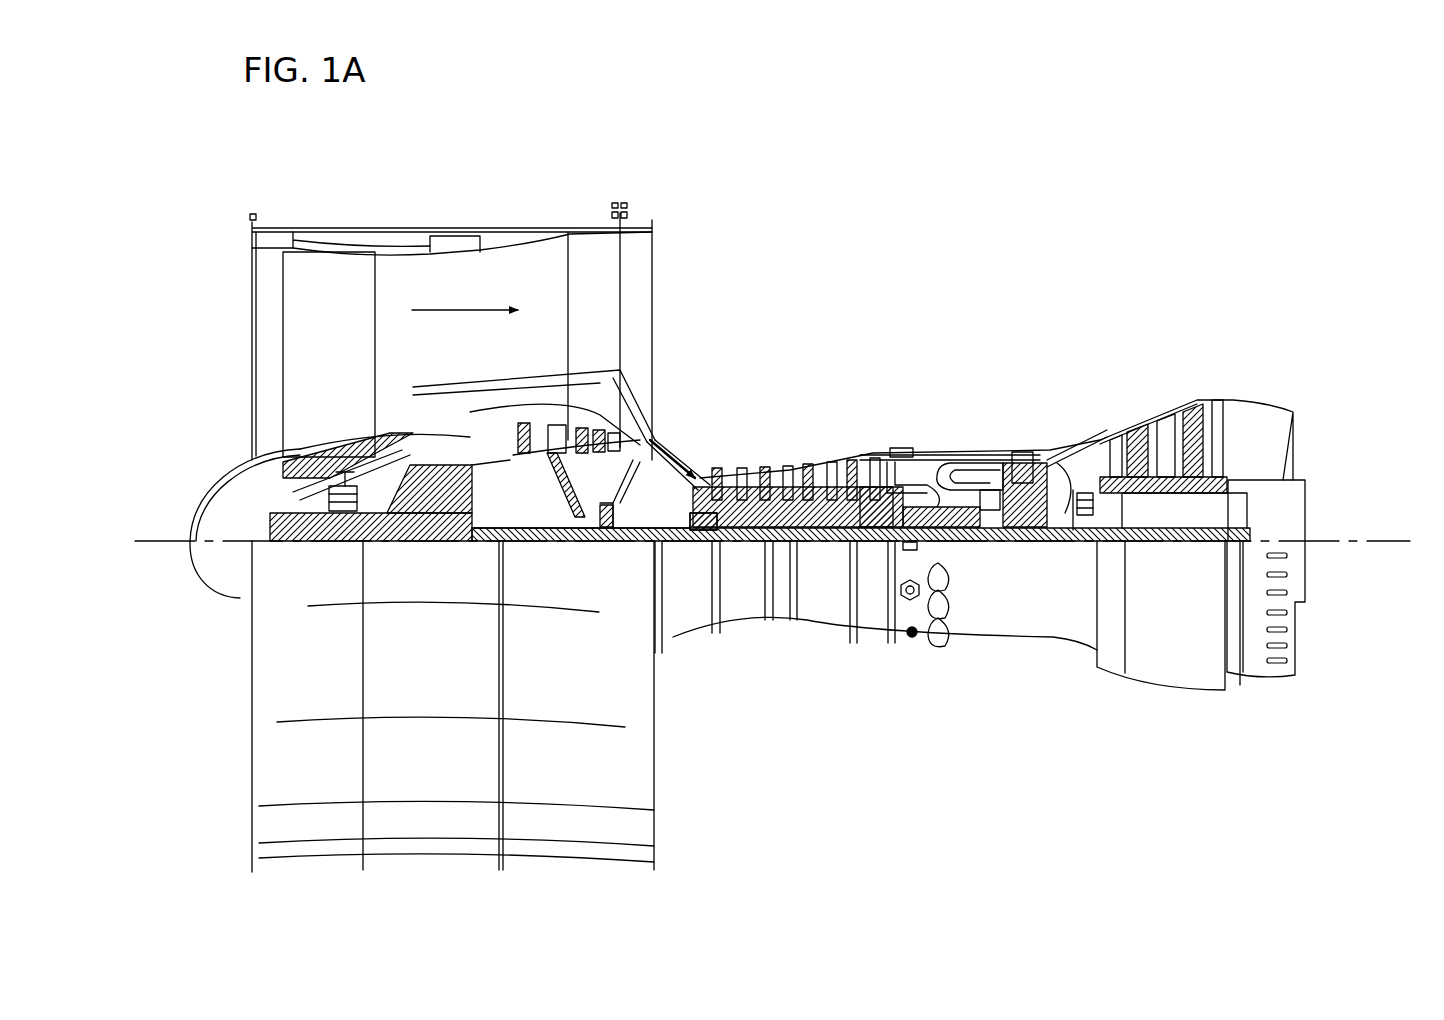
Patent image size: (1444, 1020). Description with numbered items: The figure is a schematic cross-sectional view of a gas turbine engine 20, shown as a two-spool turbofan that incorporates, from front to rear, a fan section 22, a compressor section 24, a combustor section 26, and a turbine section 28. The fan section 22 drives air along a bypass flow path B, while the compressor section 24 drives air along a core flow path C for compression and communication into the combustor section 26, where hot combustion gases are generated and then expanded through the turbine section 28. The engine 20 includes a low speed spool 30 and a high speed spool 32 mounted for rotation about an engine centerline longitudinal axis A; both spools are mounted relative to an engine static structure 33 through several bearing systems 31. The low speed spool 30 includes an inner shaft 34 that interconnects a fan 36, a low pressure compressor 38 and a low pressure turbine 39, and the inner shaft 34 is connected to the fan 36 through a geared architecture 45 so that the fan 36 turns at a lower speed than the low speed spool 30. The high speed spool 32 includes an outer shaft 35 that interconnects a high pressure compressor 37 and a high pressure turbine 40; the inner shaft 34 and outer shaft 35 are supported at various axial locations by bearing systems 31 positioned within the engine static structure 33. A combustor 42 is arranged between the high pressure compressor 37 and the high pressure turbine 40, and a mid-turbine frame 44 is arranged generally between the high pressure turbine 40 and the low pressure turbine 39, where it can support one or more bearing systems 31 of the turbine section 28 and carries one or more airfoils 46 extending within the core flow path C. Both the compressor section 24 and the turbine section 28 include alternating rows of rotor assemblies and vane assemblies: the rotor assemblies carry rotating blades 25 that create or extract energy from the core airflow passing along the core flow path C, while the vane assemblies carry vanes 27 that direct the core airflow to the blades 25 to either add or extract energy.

The gas turbine engine 20 is at (965, 277).
The fan section 22 is at (373, 220).
The compressor section 24 is at (712, 436).
The blades 25 is at (523, 423).
The combustor section 26 is at (955, 428).
The vanes 27 is at (543, 430).
The turbine section 28 is at (1113, 418).
The low speed spool 30 is at (825, 552).
The bearing systems 31 is at (365, 520).
The high speed spool 32 is at (875, 470).
The engine static structure 33 is at (872, 640).
The inner shaft 34 is at (673, 545).
The outer shaft 35 is at (960, 541).
The fan 36 is at (345, 368).
The high pressure compressor 37 is at (795, 465).
The low pressure compressor 38 is at (572, 385).
The low pressure turbine 39 is at (1165, 430).
The high pressure turbine 40 is at (1022, 450).
The combustor 42 is at (960, 470).
The mid-turbine frame 44 is at (1075, 436).
The geared architecture 45 is at (455, 505).
The airfoils 46 is at (1105, 508).
The engine centerline longitudinal axis A is at (1396, 532).
The bypass flow path B is at (453, 310).
The core flow path C is at (658, 445).